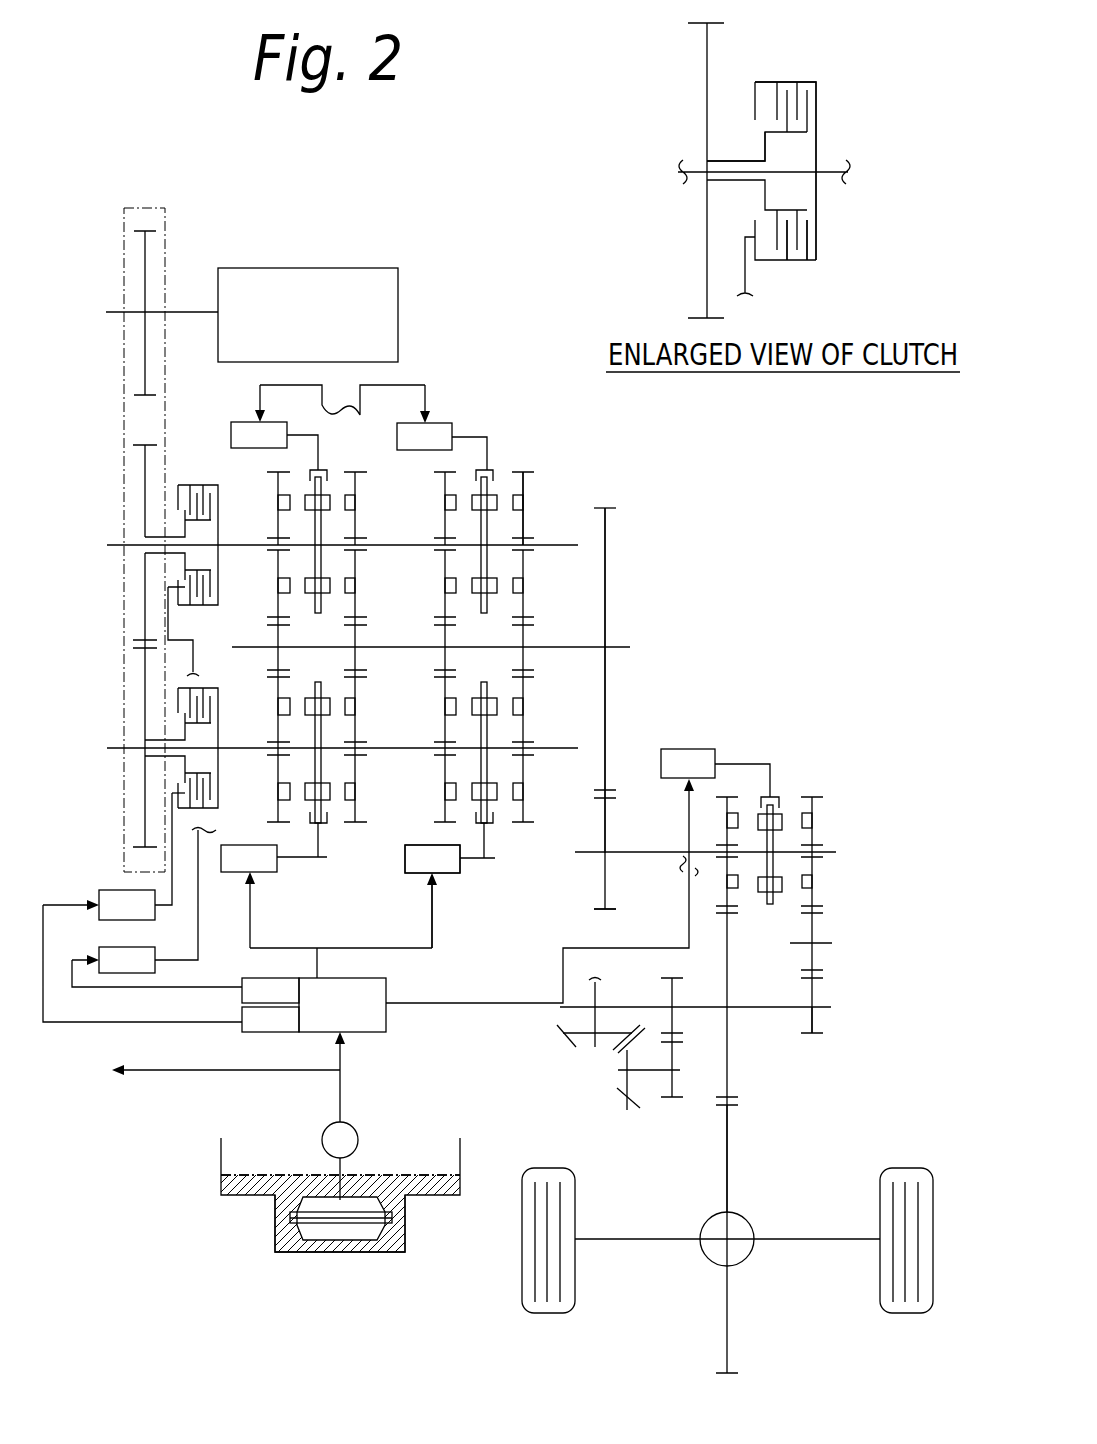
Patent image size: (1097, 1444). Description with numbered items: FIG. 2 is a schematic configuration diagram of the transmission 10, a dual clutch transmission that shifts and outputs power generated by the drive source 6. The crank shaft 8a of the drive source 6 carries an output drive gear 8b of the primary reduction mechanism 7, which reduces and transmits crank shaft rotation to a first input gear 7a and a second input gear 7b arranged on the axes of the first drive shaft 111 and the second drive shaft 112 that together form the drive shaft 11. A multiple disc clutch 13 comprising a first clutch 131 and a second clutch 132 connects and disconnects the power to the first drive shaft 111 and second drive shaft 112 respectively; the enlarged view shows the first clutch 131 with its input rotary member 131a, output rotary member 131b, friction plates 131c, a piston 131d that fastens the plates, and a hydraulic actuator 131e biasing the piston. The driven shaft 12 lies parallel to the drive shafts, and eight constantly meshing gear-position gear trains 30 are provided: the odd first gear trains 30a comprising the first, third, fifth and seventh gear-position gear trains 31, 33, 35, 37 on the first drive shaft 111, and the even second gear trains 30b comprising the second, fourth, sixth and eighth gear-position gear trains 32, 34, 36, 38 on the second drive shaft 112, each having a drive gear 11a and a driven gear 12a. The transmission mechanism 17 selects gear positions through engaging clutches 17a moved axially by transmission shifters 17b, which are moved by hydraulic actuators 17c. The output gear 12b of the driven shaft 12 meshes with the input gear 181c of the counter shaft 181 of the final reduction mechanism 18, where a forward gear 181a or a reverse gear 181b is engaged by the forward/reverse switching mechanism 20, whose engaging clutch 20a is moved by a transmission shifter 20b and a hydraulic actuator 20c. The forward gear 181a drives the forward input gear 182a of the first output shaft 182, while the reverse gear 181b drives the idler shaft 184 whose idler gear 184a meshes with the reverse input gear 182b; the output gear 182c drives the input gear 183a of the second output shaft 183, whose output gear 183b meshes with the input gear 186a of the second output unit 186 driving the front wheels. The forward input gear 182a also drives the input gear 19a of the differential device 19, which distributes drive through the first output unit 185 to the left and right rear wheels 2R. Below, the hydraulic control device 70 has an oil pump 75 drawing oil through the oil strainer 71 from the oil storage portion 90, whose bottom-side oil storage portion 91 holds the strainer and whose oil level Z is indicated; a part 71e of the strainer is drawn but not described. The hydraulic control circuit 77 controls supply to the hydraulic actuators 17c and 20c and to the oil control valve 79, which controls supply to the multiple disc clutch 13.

The drive source 6 is at (318, 331).
The primary reduction mechanism 7 is at (144, 207).
The first input gear 7a is at (138, 847).
The second input gear 7b is at (140, 444).
The crank shaft 8a is at (194, 311).
The output drive gear 8b is at (148, 230).
The transmission 10 is at (489, 386).
The drive shaft 11 is at (472, 419).
The drive gear 11a is at (546, 496).
The first drive shaft 111 is at (117, 747).
The second drive shaft 112 is at (117, 544).
The driven shaft 12 is at (623, 646).
The driven gear 12a is at (533, 636).
The output gear 12b is at (611, 507).
The multiple disc clutch 13 is at (497, 426).
The first clutch 131 is at (166, 770).
The input rotary member 131a is at (762, 140).
The output rotary member 131b is at (817, 210).
The friction plates 131c is at (808, 237).
The piston 131d is at (747, 278).
The hydraulic actuator 131e is at (138, 975).
The second clutch 132 is at (166, 568).
The transmission mechanism 17 is at (284, 458).
The engaging clutch 17a is at (498, 848).
The transmission shifter 17b is at (447, 876).
The hydraulic actuator 17c is at (436, 897).
The final reduction mechanism 18 is at (700, 1015).
The counter shaft 181 is at (830, 851).
The forward gear 181a is at (716, 806).
The reverse gear 181b is at (812, 897).
The input gear 181c is at (606, 868).
The first output shaft 182 is at (823, 1003).
The forward input gear 182a is at (733, 1082).
The reverse input gear 182b is at (812, 1020).
The output gear 182c is at (670, 1003).
The second output shaft 183 is at (617, 1072).
The input gear 183a is at (670, 1100).
The output gear 183b is at (632, 1107).
The idler shaft 184 is at (822, 943).
The idler gear 184a is at (812, 963).
The first output unit 185 is at (693, 1232).
The second output unit 186 is at (591, 997).
The input gear 186a is at (551, 1043).
The differential device 19 is at (688, 1262).
The input gear 19a is at (733, 1110).
The rear wheel 2R is at (520, 1274).
The forward/reverse switching mechanism 20 is at (858, 676).
The engaging clutch 20a is at (787, 817).
The transmission shifter 20b is at (770, 775).
The hydraulic actuator 20c is at (698, 748).
The gear-position gear trains 30 is at (772, 489).
The first gear trains 30a is at (579, 717).
The second gear trains 30b is at (578, 601).
The first gear-position gear train 31 is at (525, 834).
The second gear-position gear train 32 is at (523, 466).
The third gear-position gear train 33 is at (432, 773).
The fourth gear-position gear train 34 is at (432, 568).
The fifth gear-position gear train 35 is at (381, 741).
The sixth gear-position gear train 36 is at (381, 536).
The seventh gear-position gear train 37 is at (268, 765).
The eighth gear-position gear train 38 is at (268, 573).
The hydraulic control device 70 is at (138, 1114).
The oil strainer 71 is at (383, 1232).
The strainer element 71e is at (342, 1244).
The oil pump 75 is at (322, 1136).
The hydraulic control circuit 77 is at (359, 1020).
The oil control valve 79 is at (284, 1034).
The oil storage portion 90 is at (219, 1186).
The bottom-side oil storage portion 91 is at (272, 1238).
The oil level Z is at (398, 1174).